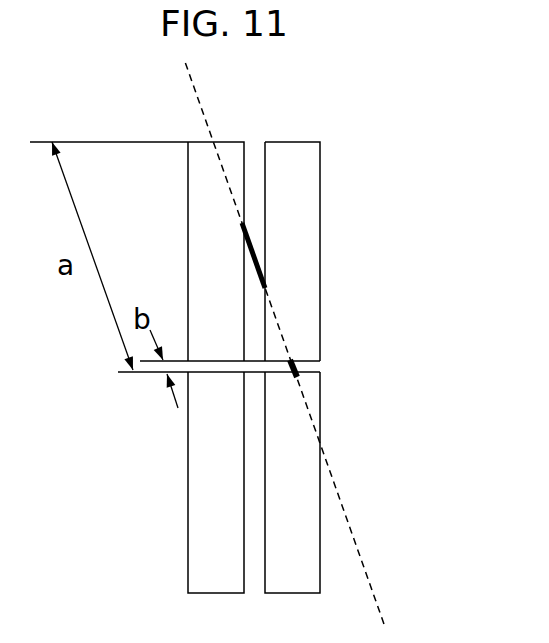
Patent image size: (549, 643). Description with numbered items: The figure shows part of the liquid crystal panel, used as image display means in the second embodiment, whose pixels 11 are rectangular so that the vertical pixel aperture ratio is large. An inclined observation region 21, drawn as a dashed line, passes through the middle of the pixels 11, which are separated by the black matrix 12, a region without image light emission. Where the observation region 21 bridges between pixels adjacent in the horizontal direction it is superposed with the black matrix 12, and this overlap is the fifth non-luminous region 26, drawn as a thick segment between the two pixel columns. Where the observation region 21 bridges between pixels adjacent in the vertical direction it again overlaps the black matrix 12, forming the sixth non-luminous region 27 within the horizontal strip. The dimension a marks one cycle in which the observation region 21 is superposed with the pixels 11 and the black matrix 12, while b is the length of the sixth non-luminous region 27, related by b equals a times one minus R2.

The pixels 11 is at (315, 223).
The black matrix 12 is at (318, 367).
The observation region 21 is at (362, 562).
The fifth non-luminous region 26 is at (255, 252).
The sixth non-luminous region 27 is at (290, 373).